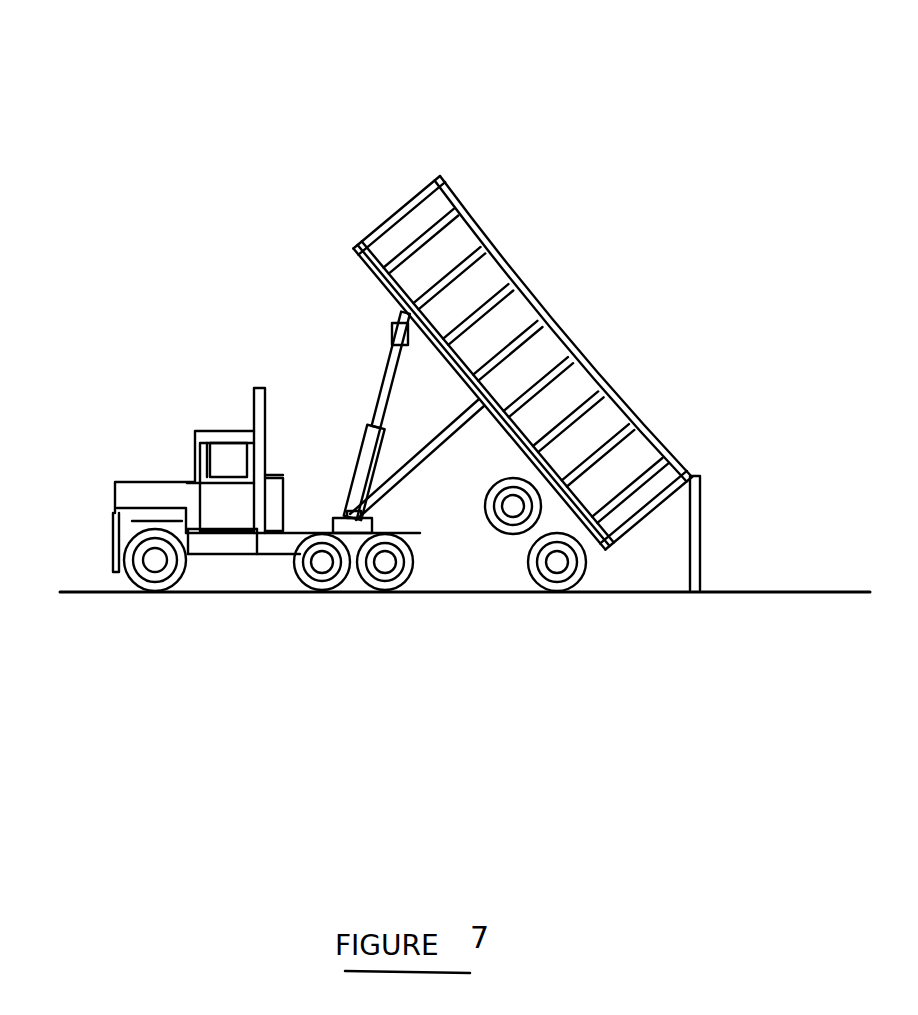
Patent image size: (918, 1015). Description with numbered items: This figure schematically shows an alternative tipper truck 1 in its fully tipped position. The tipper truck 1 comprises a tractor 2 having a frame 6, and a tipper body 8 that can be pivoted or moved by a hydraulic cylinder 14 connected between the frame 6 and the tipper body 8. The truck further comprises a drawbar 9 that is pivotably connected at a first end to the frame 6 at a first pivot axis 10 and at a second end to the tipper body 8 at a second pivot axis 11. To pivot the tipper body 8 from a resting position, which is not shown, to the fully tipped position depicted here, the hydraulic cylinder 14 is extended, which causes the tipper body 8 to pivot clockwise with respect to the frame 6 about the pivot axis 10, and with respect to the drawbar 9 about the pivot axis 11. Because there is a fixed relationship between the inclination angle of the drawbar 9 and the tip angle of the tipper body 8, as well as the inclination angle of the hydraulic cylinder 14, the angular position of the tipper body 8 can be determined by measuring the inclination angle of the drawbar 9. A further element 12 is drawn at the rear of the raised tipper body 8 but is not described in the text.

The tipper truck 1 is at (547, 34).
The tractor 2 is at (216, 412).
The frame 6 is at (275, 540).
The tipper body 8 is at (568, 330).
The drawbar 9 is at (424, 461).
The first pivot axis 10 is at (363, 520).
The second pivot axis 11 is at (481, 404).
The tailgate leg 12 is at (698, 530).
The hydraulic cylinder 14 is at (368, 417).